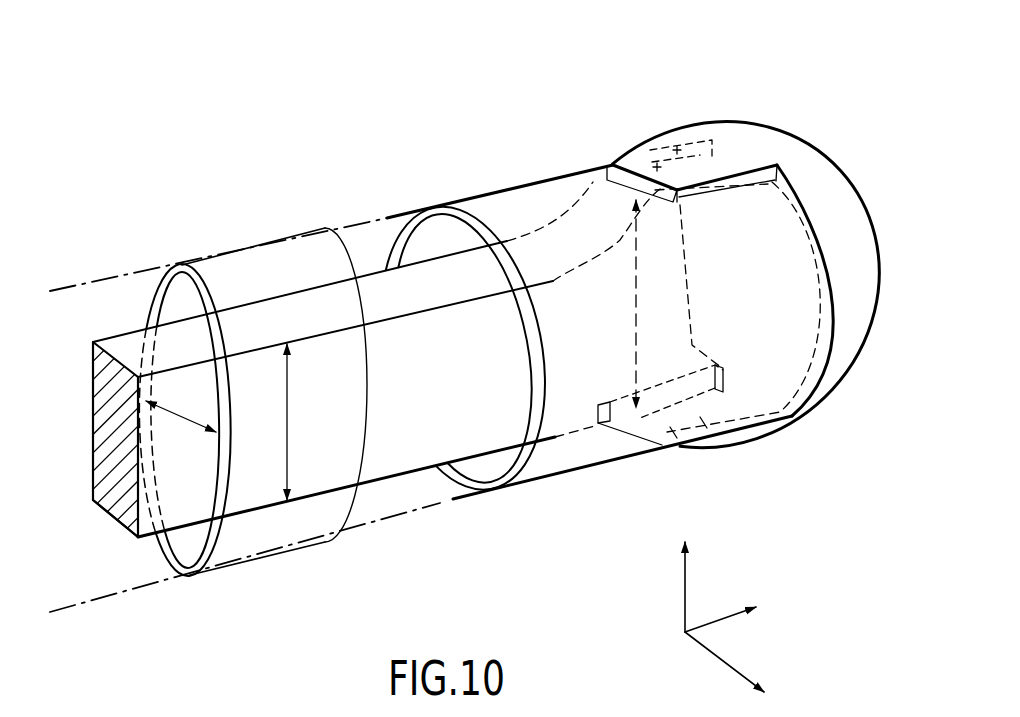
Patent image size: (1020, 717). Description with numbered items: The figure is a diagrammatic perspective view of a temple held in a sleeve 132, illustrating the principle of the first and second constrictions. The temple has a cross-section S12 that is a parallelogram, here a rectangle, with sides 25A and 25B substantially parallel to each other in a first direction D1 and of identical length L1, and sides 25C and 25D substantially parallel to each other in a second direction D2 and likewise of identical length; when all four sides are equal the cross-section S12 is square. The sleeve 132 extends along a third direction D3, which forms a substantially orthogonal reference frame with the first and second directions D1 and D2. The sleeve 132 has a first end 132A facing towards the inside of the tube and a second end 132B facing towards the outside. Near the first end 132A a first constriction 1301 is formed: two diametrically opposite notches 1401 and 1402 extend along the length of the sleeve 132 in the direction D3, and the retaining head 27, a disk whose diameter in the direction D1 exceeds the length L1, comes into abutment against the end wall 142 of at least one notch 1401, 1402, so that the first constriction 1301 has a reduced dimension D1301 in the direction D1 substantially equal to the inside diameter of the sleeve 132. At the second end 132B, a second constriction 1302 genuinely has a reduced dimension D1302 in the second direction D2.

The side 25A is at (84, 440).
The side 25B is at (438, 395).
The side 25C is at (246, 300).
The side 25D is at (147, 542).
The cross-section of the temple S12 is at (93, 502).
The second constriction 1302 is at (180, 268).
The reduced dimension of the second constriction D1302 is at (186, 412).
The length of the cross-section L1 is at (299, 422).
The sleeve 132 is at (506, 192).
The second end of the sleeve 132B is at (508, 492).
The first end of the sleeve 132A is at (777, 431).
The retaining head 27 is at (837, 192).
The first constriction 1301 is at (636, 165).
The notch 1401 is at (675, 162).
The notch 1402 is at (708, 412).
The end wall 142 is at (678, 447).
The reduced dimension of the first constriction D1301 is at (609, 304).
The first direction D1 is at (701, 580).
The second direction D2 is at (736, 662).
The third direction D3 is at (727, 602).